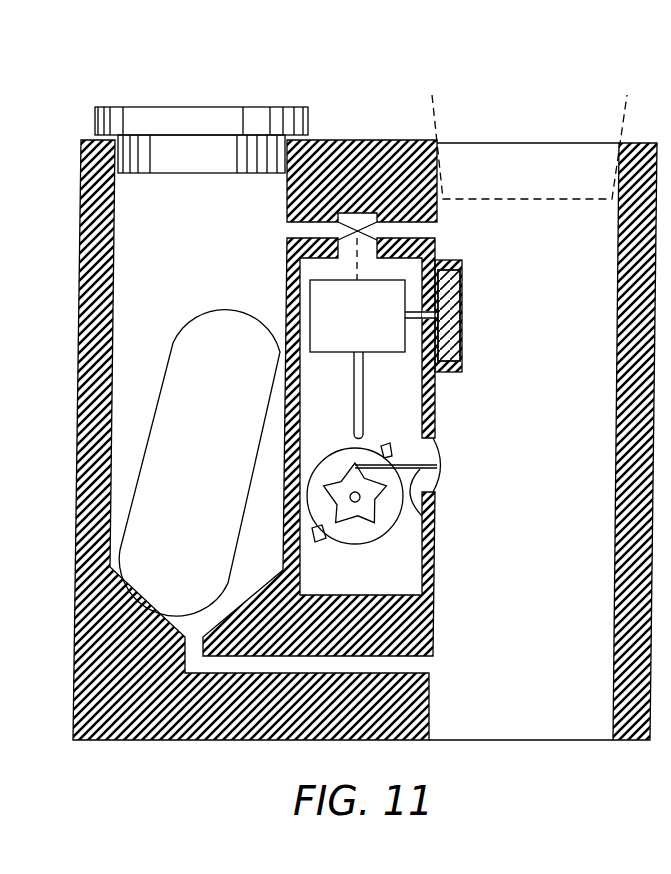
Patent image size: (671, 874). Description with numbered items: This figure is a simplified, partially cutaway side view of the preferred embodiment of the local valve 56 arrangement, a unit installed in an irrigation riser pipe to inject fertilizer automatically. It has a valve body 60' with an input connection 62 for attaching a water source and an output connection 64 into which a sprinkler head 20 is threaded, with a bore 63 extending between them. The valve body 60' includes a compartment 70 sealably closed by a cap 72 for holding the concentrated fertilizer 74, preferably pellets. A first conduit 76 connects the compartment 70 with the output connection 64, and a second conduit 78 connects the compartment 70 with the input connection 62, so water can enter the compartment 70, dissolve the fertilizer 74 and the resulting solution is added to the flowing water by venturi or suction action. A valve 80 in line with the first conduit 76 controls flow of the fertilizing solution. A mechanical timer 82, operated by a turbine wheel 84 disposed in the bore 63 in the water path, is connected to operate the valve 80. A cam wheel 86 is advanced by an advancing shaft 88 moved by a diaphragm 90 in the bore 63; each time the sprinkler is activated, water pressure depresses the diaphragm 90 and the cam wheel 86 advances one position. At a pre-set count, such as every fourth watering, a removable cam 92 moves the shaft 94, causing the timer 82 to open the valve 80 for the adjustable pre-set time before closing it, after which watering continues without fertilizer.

The sprinkler head 20 is at (437, 115).
The local valve 56 is at (377, 114).
The valve body 60' is at (219, 440).
The input connection 62 is at (517, 702).
The bore 63 is at (511, 418).
The output connection 64 is at (537, 175).
The compartment 70 is at (183, 223).
The cap 72 is at (212, 107).
The concentrated fertilizer 74 is at (200, 313).
The first conduit 76 is at (413, 228).
The second conduit 78 is at (413, 666).
The valve 80 is at (334, 229).
The mechanical timer 82 is at (333, 352).
The turbine wheel 84 is at (463, 311).
The cam wheel 86 is at (372, 545).
The advancing shaft 88 is at (432, 521).
The diaphragm 90 is at (440, 462).
The cam 92 is at (387, 444).
The shaft 94 is at (364, 405).